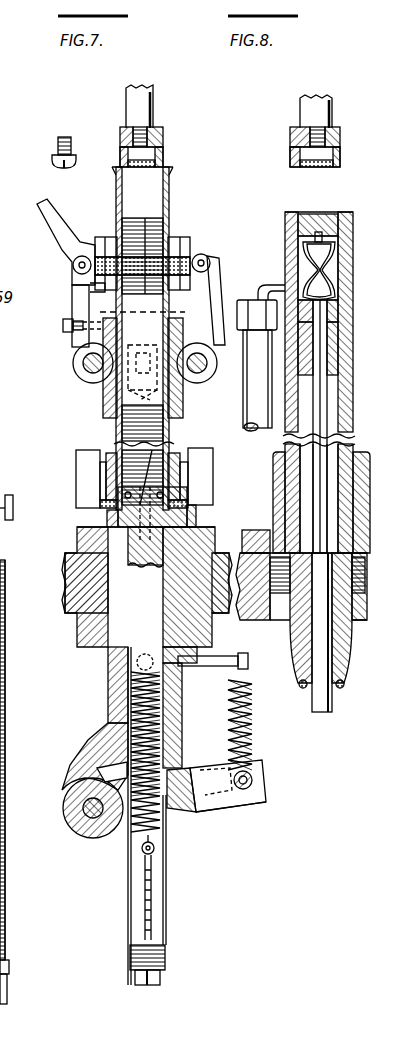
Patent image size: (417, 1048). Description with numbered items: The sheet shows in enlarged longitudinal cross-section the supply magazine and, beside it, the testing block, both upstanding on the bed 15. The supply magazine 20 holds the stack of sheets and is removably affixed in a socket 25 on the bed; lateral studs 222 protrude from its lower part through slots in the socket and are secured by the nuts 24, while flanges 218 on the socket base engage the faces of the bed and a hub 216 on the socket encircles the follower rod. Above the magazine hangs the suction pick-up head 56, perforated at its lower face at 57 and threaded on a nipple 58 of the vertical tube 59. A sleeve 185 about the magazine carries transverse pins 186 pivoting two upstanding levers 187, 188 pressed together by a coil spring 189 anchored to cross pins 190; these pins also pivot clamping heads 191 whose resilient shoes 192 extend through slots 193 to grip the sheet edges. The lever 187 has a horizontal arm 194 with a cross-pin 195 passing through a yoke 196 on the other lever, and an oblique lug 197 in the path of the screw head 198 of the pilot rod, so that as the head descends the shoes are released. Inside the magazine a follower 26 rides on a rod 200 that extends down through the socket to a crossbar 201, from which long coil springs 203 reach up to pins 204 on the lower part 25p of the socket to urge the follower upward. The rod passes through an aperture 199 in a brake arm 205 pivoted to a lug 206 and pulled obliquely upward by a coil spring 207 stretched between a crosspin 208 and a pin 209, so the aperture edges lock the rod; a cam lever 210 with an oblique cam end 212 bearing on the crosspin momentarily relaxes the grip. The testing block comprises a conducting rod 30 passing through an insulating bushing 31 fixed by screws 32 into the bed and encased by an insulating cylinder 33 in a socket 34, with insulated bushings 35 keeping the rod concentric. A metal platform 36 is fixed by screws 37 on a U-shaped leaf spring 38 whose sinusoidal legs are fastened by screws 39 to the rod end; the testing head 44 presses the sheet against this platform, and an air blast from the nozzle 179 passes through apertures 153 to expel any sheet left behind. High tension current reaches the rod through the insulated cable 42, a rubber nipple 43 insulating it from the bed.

In FIG. 7, the vertical tube 59 is at (155, 97).
In FIG. 7, the pick-up head 56 is at (118, 144).
In FIG. 7, the nipple 58 is at (164, 131).
In FIG. 7, the perforations 57 is at (165, 153).
In FIG. 7, the screw head 198 is at (50, 160).
In FIG. 7, the coil spring 189 is at (169, 216).
In FIG. 7, the slots 193 is at (160, 240).
In FIG. 7, the resilient shoe 192 is at (110, 238).
In FIG. 7, the upper extension lug 197 is at (44, 228).
In FIG. 7, the cross pins 190 is at (72, 265).
In FIG. 7, the upstanding lever 188 is at (213, 290).
In FIG. 7, the clamping head 191 is at (90, 284).
In FIG. 7, the upstanding lever 187 is at (80, 305).
In FIG. 7, the cross-pin 195 is at (77, 345).
In FIG. 7, the transverse pins 186 is at (85, 364).
In FIG. 7, the horizontal arm 194 is at (103, 401).
In FIG. 7, the yoke 196 is at (187, 401).
In FIG. 7, the sleeve 185 is at (107, 414).
In FIG. 7, the supply magazine 20 is at (120, 436).
In FIG. 7, the follower 26 is at (173, 449).
In FIG. 7, the lateral studs 222 is at (110, 474).
In FIG. 7, the set screws 24 is at (80, 495).
In FIG. 7, the socket 25 is at (188, 515).
In FIG. 7, the flanges 218 is at (78, 529).
In FIG. 7, the rod 200 is at (107, 568).
In FIG. 7, the hub 216 is at (108, 592).
In FIG. 7, the pins 204 is at (113, 668).
In FIG. 7, the lower part of magazine socket 25p is at (115, 689).
In FIG. 7, the long coil springs 203 is at (115, 708).
In FIG. 7, the lug 206 is at (62, 779).
In FIG. 7, the brake arm 205 is at (118, 828).
In FIG. 7, the pin 209 is at (226, 656).
In FIG. 7, the coil spring 207 is at (250, 704).
In FIG. 7, the cam lever 210 is at (200, 768).
In FIG. 7, the crosspin 208 is at (257, 793).
In FIG. 7, the aperture 199 is at (167, 810).
In FIG. 7, the cam end 212 is at (227, 810).
In FIG. 7, the crossbar 201 is at (170, 962).
In FIG. 8, the testing head 44 is at (295, 130).
In FIG. 8, the metal platform 36 is at (323, 217).
In FIG. 8, the apertures 153 is at (308, 216).
In FIG. 8, the leaf spring 38 is at (298, 247).
In FIG. 8, the screws 37 is at (298, 260).
In FIG. 8, the conducting rod 30 is at (315, 460).
In FIG. 8, the insulated bushings 35 is at (297, 368).
In FIG. 8, the nozzle 179 is at (263, 282).
In FIG. 8, the screws 39 is at (285, 336).
In FIG. 8, the insulating cylinder 33 is at (287, 436).
In FIG. 8, the socket 34 is at (282, 488).
In FIG. 8, the insulating bushing 31 is at (277, 514).
In FIG. 8, the screws 32 is at (250, 555).
In FIG. 8, the bed 15 is at (273, 618).
In FIG. 8, the insulated cable 42 is at (323, 712).
In FIG. 8, the rubber nipple 43 is at (345, 672).